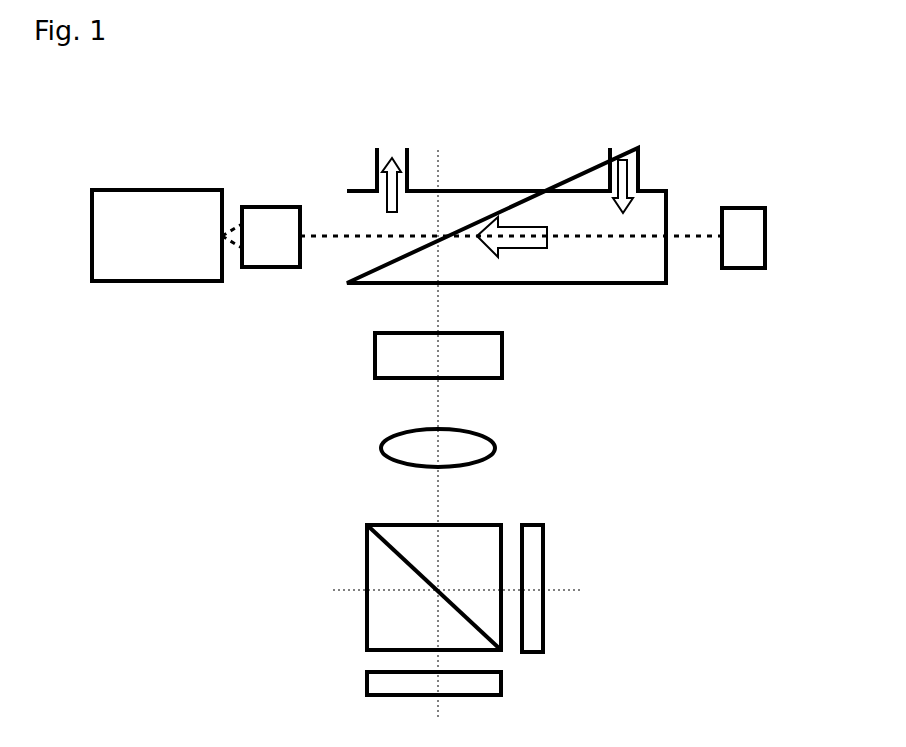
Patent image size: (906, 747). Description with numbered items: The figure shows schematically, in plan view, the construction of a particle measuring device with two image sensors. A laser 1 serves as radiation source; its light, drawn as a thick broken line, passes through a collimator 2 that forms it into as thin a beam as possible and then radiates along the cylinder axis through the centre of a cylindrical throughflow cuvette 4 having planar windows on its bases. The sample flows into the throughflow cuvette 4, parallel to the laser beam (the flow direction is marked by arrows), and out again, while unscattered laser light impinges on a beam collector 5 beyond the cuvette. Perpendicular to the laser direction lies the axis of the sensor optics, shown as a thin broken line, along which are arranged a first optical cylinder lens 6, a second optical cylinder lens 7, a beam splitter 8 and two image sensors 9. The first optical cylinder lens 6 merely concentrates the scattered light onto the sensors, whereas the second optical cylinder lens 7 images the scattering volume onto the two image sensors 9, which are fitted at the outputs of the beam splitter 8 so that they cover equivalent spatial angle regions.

The laser 1 is at (100, 176).
The collimator 2 is at (263, 187).
The throughflow cuvette 4 is at (476, 178).
The beam collector 5 is at (754, 195).
The first optical cylinder lens 6 is at (523, 351).
The second optical cylinder lens 7 is at (512, 454).
The beam splitter 8 is at (342, 570).
The image sensors 9 is at (518, 692).